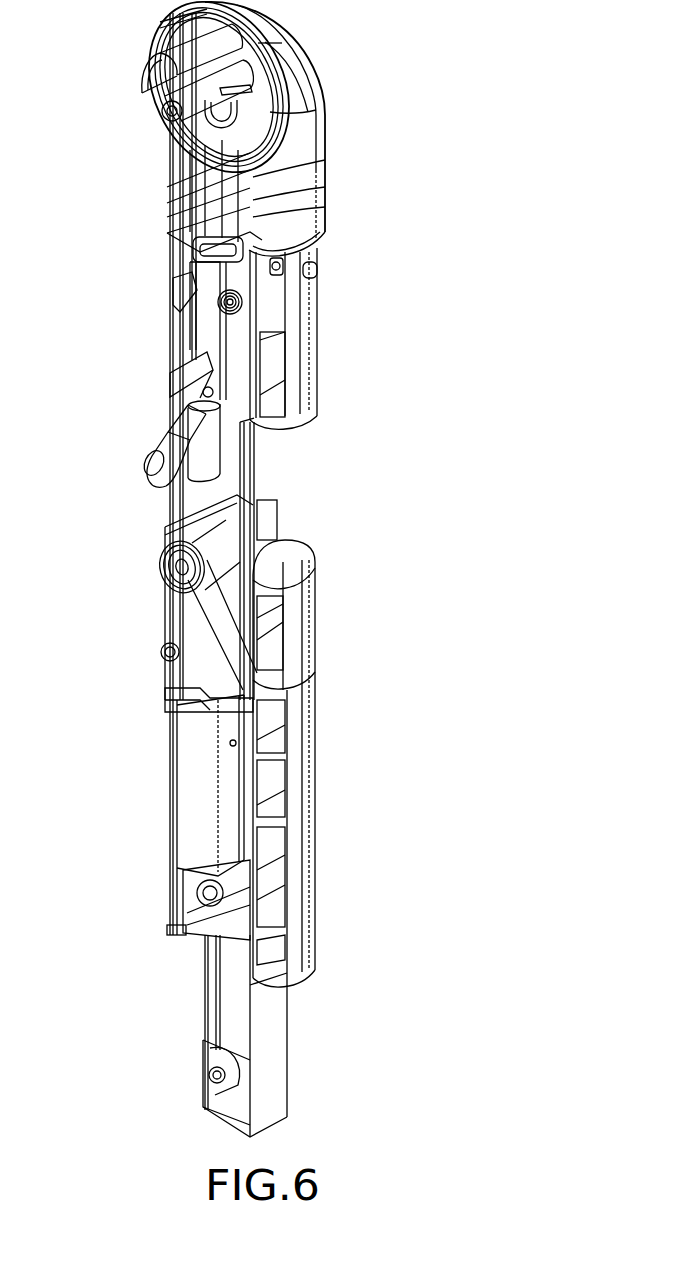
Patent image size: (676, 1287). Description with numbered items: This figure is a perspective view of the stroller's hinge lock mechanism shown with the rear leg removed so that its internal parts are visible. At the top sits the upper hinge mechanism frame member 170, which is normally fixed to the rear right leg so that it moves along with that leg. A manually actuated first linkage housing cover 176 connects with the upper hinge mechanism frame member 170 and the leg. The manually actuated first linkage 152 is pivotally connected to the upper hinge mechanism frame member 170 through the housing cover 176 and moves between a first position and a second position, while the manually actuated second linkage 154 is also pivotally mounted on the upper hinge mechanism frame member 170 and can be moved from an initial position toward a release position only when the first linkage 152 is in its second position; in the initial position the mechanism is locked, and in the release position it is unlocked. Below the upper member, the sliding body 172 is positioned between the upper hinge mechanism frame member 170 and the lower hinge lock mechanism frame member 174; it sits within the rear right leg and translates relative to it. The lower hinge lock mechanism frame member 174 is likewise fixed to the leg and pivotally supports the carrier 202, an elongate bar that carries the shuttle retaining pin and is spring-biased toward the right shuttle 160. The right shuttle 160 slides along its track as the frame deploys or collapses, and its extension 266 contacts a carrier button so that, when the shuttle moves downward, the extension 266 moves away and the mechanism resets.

The upper hinge mechanism frame member 170 is at (360, 197).
The manually actuated first linkage housing cover 176 is at (233, 442).
The manually actuated first linkage 152 is at (205, 330).
The manually actuated second linkage 154 is at (160, 423).
The extension 266 is at (255, 493).
The right shuttle 160 is at (183, 603).
The sliding body 172 is at (360, 583).
The lower hinge lock mechanism frame member 174 is at (363, 808).
The carrier 202 is at (227, 777).